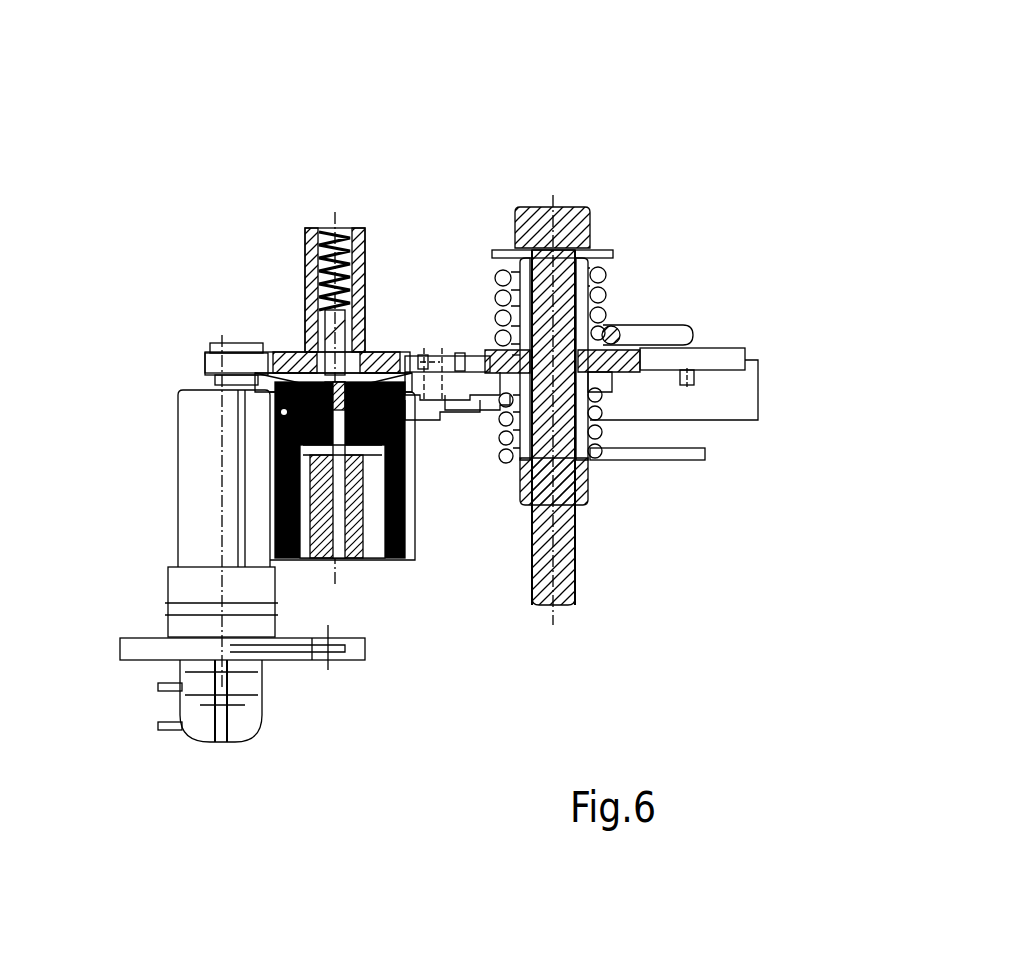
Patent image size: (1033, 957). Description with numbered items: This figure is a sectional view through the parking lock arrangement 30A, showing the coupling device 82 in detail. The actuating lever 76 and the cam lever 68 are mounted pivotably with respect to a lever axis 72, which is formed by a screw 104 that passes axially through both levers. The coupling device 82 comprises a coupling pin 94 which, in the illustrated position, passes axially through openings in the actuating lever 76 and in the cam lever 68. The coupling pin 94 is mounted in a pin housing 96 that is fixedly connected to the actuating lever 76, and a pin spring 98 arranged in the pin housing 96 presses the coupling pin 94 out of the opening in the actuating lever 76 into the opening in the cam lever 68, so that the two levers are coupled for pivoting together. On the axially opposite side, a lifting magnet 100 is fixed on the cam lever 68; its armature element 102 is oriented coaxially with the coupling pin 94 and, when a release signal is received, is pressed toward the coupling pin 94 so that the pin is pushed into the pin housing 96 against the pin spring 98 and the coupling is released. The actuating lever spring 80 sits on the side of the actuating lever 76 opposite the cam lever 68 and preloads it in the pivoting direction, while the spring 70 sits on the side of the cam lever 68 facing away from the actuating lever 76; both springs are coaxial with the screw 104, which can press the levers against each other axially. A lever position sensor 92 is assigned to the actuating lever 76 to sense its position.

The parking lock arrangement 30A is at (789, 192).
The cam lever 68 is at (472, 388).
The spring 70 is at (648, 455).
The lever axis 72 is at (548, 555).
The actuating lever 76 is at (712, 360).
The actuating lever spring 80 is at (648, 330).
The coupling device 82 is at (258, 212).
The lever position sensor 92 is at (158, 525).
The coupling pin 94 is at (330, 335).
The pin housing 96 is at (362, 265).
The pin spring 98 is at (325, 232).
The lifting magnet 100 is at (410, 575).
The armature element 102 is at (215, 363).
The screw 104 is at (573, 240).